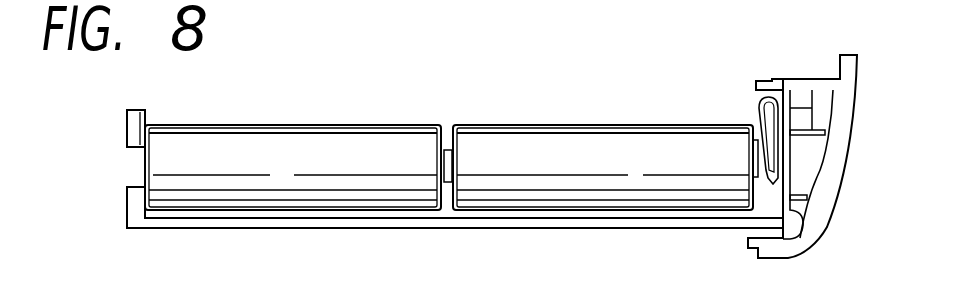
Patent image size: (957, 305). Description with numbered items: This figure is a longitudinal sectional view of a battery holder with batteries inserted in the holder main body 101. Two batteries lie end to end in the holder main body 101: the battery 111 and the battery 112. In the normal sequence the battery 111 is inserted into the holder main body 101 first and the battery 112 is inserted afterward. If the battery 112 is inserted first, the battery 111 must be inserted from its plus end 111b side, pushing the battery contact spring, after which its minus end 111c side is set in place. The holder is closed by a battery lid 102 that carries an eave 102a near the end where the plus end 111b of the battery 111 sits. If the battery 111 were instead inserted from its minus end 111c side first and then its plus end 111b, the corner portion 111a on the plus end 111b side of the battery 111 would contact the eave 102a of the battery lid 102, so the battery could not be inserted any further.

The holder main body 101 is at (135, 125).
The battery lid 102 is at (772, 247).
The eave 102a is at (770, 78).
The battery 111 is at (571, 140).
The corner portion 111a is at (757, 127).
The plus end 111b is at (758, 170).
The minus end 111c is at (453, 167).
The battery 112 is at (208, 145).